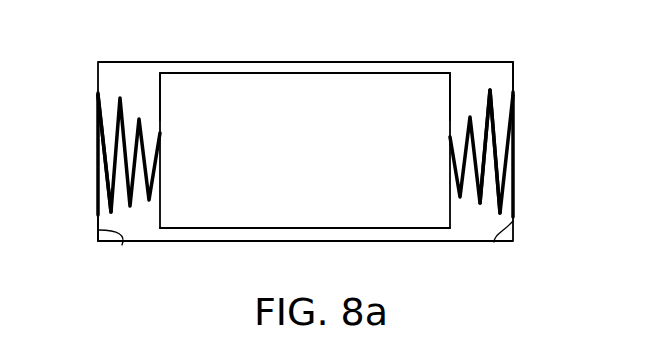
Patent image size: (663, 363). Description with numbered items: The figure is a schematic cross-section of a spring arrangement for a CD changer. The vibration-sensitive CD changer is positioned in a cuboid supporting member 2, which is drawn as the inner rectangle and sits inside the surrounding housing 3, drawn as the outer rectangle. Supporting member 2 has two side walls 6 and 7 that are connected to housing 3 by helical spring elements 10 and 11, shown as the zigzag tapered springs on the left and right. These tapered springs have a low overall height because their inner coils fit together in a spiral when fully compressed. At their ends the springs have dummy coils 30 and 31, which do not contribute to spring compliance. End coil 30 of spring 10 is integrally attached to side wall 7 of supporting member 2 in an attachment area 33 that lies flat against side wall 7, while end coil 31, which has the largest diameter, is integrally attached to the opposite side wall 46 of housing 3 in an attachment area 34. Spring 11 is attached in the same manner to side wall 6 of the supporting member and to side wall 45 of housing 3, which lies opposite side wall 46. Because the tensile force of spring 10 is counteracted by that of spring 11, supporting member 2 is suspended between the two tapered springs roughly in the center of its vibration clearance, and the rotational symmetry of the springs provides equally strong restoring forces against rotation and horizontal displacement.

The supporting member 2 is at (402, 228).
The housing 3 is at (498, 62).
The side wall 6 is at (450, 98).
The side wall 7 is at (161, 100).
The helical spring element 10 is at (99, 103).
The helical spring element 11 is at (489, 90).
The dummy coil 30 is at (160, 133).
The dummy coil 31 is at (122, 245).
The attachment area 33 is at (161, 194).
The attachment area 34 is at (98, 127).
The side wall 45 is at (513, 80).
The side wall 46 is at (98, 232).